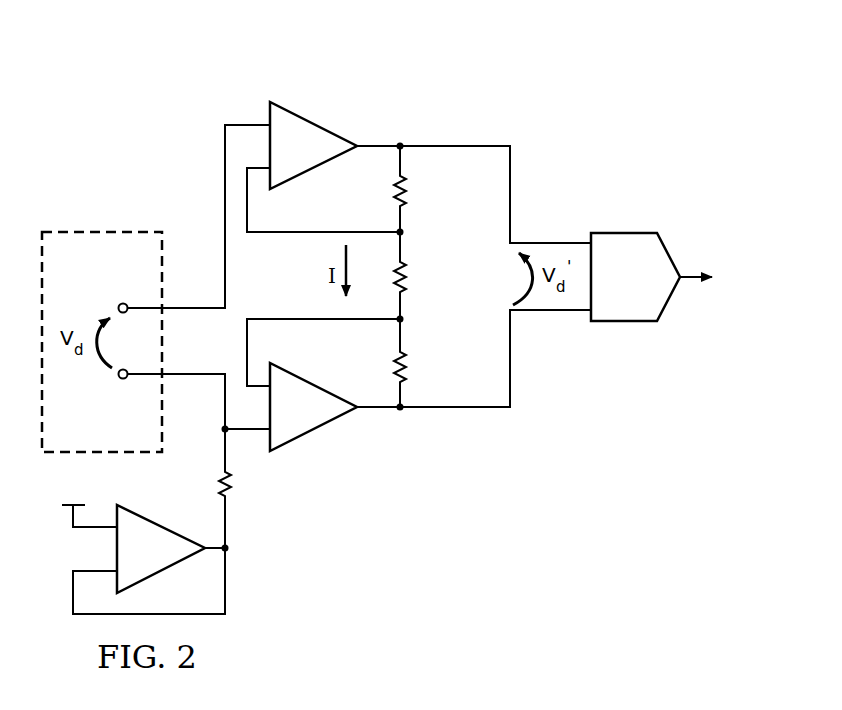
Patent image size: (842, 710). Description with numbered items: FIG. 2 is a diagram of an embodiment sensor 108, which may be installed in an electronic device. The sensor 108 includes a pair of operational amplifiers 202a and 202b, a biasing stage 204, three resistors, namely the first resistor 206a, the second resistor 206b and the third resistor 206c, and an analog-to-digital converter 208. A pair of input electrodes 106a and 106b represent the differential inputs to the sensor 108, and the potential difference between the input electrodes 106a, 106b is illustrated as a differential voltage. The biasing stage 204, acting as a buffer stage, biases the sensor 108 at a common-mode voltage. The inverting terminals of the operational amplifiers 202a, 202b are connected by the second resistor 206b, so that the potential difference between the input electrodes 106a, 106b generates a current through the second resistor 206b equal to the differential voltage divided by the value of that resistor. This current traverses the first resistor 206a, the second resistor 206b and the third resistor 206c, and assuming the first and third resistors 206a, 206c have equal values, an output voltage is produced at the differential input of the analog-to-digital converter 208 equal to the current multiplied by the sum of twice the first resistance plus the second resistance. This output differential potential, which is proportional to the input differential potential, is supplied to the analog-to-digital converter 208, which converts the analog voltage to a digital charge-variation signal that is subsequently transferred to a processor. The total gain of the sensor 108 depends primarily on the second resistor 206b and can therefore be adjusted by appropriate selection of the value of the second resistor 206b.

The sensor 108 is at (136, 91).
The input electrode 106a is at (119, 303).
The input electrode 106b is at (120, 380).
The operational amplifier 202a is at (330, 100).
The operational amplifier 202b is at (316, 428).
The biasing stage 204 is at (272, 568).
The R1 resistor 206a is at (405, 190).
The R2 resistor 206b is at (405, 280).
The R3 resistor 206c is at (405, 368).
The analog-to-digital converter 208 is at (624, 232).